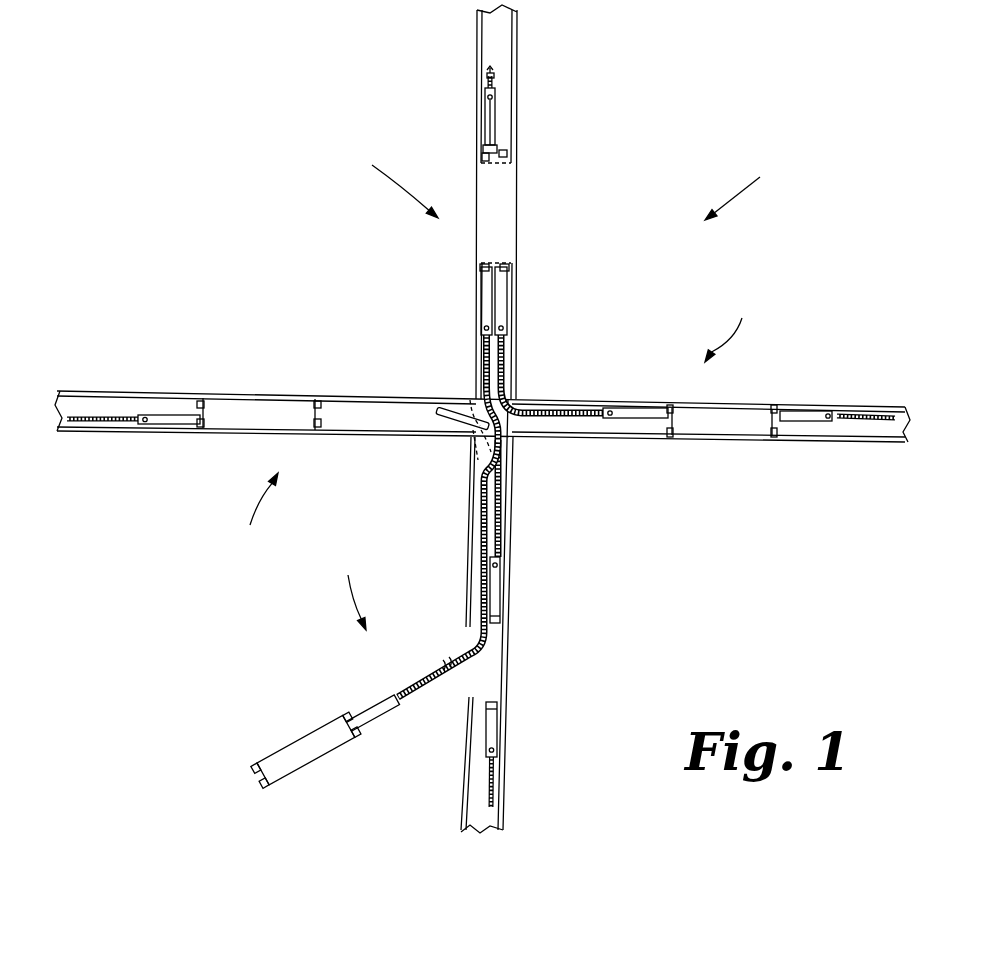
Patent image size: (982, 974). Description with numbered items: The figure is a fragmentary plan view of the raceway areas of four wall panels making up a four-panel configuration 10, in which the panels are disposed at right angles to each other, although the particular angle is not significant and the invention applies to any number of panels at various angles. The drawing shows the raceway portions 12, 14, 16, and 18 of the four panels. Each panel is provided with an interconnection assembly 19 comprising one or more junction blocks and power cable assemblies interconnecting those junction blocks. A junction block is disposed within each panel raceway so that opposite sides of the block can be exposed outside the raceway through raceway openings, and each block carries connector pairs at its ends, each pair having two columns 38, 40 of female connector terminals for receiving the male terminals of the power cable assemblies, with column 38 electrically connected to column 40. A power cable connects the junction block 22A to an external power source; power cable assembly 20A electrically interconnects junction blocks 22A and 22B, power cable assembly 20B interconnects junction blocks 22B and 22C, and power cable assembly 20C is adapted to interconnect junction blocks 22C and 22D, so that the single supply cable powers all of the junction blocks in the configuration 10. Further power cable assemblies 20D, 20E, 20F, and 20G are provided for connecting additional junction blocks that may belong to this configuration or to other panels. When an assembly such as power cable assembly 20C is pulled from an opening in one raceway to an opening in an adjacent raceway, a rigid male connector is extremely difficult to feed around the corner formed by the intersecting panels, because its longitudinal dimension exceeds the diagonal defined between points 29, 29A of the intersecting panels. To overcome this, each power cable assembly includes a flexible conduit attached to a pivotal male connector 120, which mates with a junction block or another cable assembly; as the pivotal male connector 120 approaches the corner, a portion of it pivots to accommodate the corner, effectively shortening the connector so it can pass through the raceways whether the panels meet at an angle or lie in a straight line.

The four-panel configuration 10 is at (743, 183).
The raceway portion 12 is at (518, 107).
The raceway portion 14 is at (595, 444).
The raceway portion 16 is at (512, 525).
The raceway portion 18 is at (381, 390).
The interconnection assembly 19 is at (497, 383).
The power cable assembly 20A is at (510, 347).
The power cable assembly 20B is at (483, 343).
The power cable assembly 20C is at (480, 497).
The power cable assembly 20D is at (120, 433).
The power cable assembly 20E is at (493, 776).
The power cable assembly 20F is at (846, 412).
The power cable assembly 20G is at (488, 88).
The junction block 22A is at (718, 404).
The junction block 22B is at (515, 226).
The junction block 22C is at (295, 748).
The junction block 22D is at (262, 397).
The point of intersecting panels 29 is at (509, 442).
The point of intersecting panels 29A is at (471, 410).
The column of female connector terminals 38 is at (484, 152).
The column of female connector terminals 40 is at (508, 151).
The pivotal male connector 120 is at (491, 133).